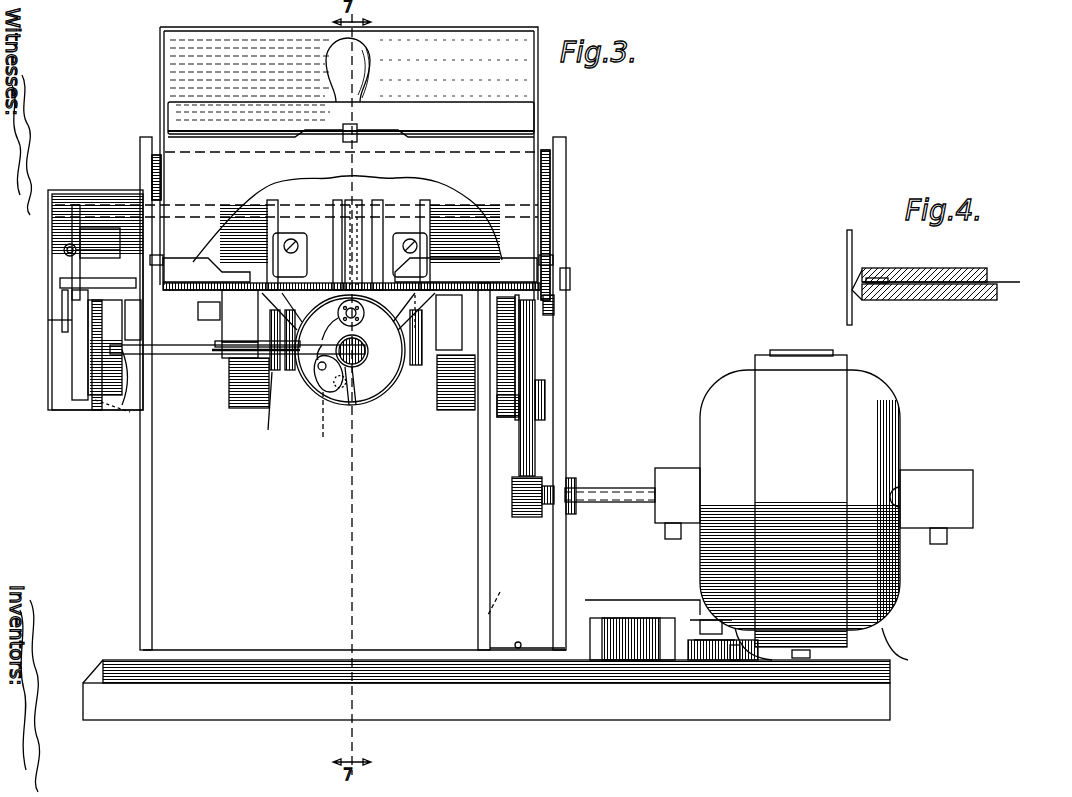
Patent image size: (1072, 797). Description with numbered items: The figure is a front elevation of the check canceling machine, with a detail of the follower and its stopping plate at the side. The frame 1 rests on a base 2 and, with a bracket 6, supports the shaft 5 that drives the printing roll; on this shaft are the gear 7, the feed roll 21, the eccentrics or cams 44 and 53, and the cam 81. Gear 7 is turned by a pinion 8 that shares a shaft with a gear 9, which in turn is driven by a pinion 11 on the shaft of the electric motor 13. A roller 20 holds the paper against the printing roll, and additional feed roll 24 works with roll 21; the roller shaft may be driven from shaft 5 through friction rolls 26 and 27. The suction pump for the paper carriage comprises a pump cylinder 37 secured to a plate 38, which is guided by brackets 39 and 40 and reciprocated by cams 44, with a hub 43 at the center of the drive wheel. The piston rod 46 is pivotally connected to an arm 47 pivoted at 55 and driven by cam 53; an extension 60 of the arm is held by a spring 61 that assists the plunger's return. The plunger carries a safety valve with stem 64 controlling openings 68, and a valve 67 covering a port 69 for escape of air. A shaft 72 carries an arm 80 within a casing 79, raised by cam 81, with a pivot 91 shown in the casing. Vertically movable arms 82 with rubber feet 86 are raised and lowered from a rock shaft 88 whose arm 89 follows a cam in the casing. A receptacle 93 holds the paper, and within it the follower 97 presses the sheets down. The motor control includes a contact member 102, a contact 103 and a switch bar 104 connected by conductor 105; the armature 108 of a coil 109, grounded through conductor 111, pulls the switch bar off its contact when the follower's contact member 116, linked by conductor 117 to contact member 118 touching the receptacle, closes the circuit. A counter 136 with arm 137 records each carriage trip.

In FIG. 3, the frame 1 is at (562, 378).
In FIG. 3, the base 2 is at (396, 665).
In FIG. 3, the shaft 5 is at (123, 385).
In FIG. 3, the bracket 6 is at (499, 589).
In FIG. 3, the gear 7 is at (497, 314).
In FIG. 3, the pinion 8 is at (504, 418).
In FIG. 3, the gear 9 is at (538, 460).
In FIG. 3, the pinion 11 is at (530, 518).
In FIG. 3, the electric motor 13 is at (187, 282).
In FIG. 3, the roller 20 is at (380, 240).
In FIG. 3, the feed roll 21 is at (252, 410).
In FIG. 3, the feed roll 24 is at (243, 215).
In FIG. 3, the friction roll 26 is at (112, 425).
In FIG. 3, the friction roll 27 is at (92, 230).
In FIG. 3, the pump cylinder 37 is at (372, 404).
In FIG. 3, the plate 38 is at (452, 295).
In FIG. 3, the bracket 39 is at (160, 258).
In FIG. 3, the bracket 40 is at (556, 300).
In FIG. 3, the hub 43 is at (408, 350).
In FIG. 3, the eccentric or cam 44 is at (290, 372).
In FIG. 3, the piston rod 46 is at (354, 405).
In FIG. 3, the arm 47 is at (325, 322).
In FIG. 3, the eccentric or cam 53 is at (268, 432).
In FIG. 3, the pivot 55 is at (321, 341).
In FIG. 3, the extension of arm 60 is at (252, 345).
In FIG. 3, the spring 61 is at (232, 356).
In FIG. 3, the valve stem 64 is at (363, 313).
In FIG. 3, the valve 67 is at (326, 390).
In FIG. 3, the openings 68 is at (370, 325).
In FIG. 3, the port 69 is at (327, 426).
In FIG. 3, the shaft 72 is at (102, 290).
In FIG. 3, the casing 79 is at (48, 320).
In FIG. 3, the arm 80 is at (60, 284).
In FIG. 3, the cam 81 is at (72, 352).
In FIG. 3, the vertically movable arm 82 is at (295, 215).
In FIG. 3, the foot 86 is at (353, 257).
In FIG. 3, the rock shaft 88 is at (553, 222).
In FIG. 3, the arm 89 is at (75, 228).
In FIG. 3, the pivot 91 is at (64, 252).
In FIG. 3, the receptacle 93 is at (162, 104).
In FIG. 4, the receptacle 93 is at (841, 268).
In FIG. 3, the follower 97 is at (460, 108).
In FIG. 4, the follower 97 is at (964, 300).
In FIG. 3, the contact member 102 is at (735, 660).
In FIG. 3, the contact 103 is at (700, 646).
In FIG. 3, the switch bar 104 is at (704, 622).
In FIG. 3, the conductor 105 is at (612, 588).
In FIG. 3, the armature 108 is at (668, 605).
In FIG. 3, the coil 109 is at (624, 620).
In FIG. 3, the conductor 111 is at (556, 648).
In FIG. 3, the contact member 116 is at (342, 134).
In FIG. 4, the conductor 117 is at (1004, 280).
In FIG. 3, the contact member 118 is at (172, 115).
In FIG. 4, the contact member 118 is at (860, 268).
In FIG. 3, the counter 136 is at (180, 356).
In FIG. 3, the arm 137 is at (210, 311).